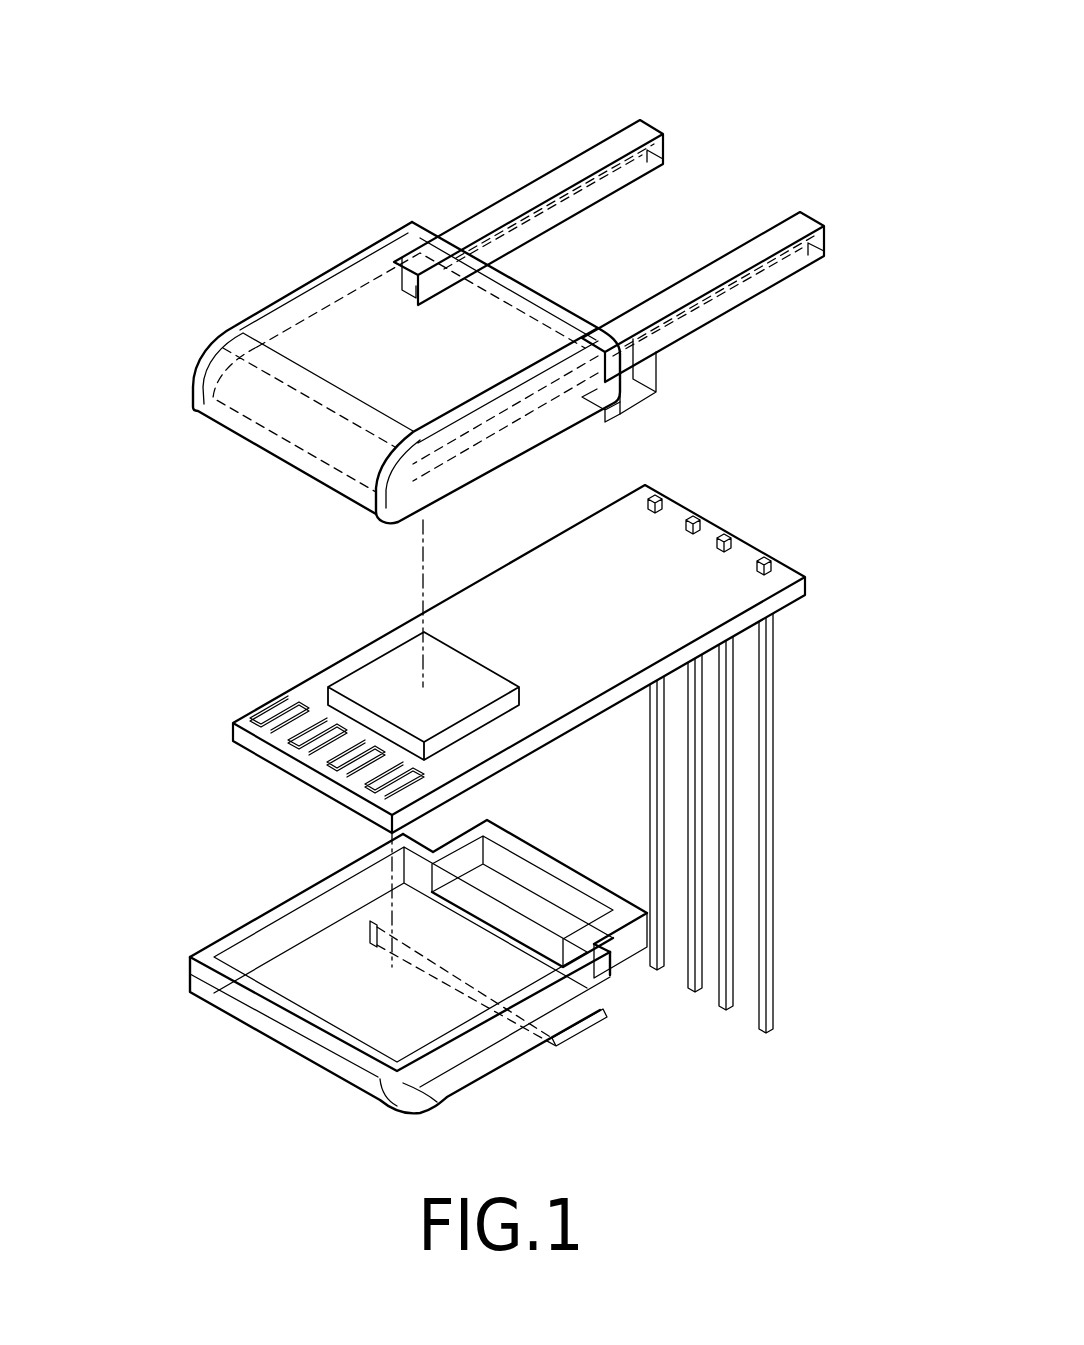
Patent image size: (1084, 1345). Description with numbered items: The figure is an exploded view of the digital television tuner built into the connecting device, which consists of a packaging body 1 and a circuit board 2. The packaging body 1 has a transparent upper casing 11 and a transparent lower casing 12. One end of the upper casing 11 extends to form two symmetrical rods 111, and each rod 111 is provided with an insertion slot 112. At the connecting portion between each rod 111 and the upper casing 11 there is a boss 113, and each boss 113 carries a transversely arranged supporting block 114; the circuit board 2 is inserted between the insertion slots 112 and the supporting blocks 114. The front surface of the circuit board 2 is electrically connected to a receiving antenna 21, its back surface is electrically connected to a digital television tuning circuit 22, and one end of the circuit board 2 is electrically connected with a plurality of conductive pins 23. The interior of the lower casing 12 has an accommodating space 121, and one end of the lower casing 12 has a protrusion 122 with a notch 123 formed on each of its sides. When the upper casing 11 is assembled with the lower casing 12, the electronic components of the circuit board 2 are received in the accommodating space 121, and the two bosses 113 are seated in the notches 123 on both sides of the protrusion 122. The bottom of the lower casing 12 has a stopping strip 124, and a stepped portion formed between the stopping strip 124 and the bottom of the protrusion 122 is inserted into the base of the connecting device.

The packaging body 1 is at (306, 260).
The upper casing 11 is at (217, 368).
The rod 111 is at (582, 160).
The insertion slot 112 is at (645, 178).
The boss 113 is at (657, 372).
The supporting block 114 is at (645, 403).
The circuit board 2 is at (694, 559).
The receiving antenna 21 is at (262, 722).
The digital television tuning circuit 22 is at (370, 677).
The conductive pins 23 is at (770, 824).
The lower casing 12 is at (287, 1037).
The accommodating space 121 is at (320, 970).
The protrusion 122 is at (555, 875).
The notch 123 is at (620, 950).
The stopping strip 124 is at (587, 1030).